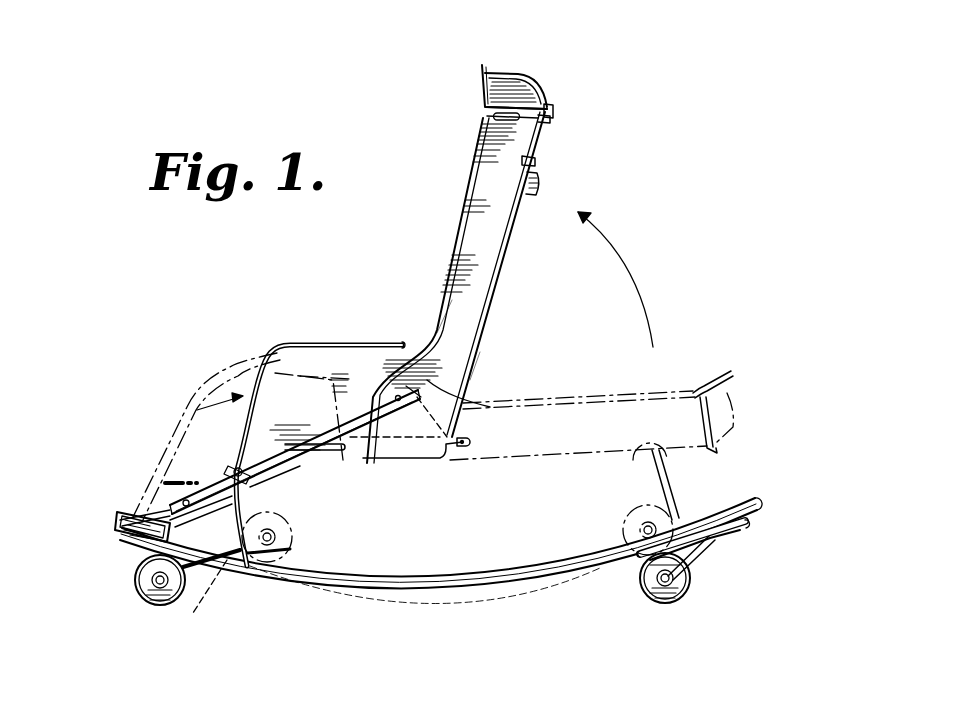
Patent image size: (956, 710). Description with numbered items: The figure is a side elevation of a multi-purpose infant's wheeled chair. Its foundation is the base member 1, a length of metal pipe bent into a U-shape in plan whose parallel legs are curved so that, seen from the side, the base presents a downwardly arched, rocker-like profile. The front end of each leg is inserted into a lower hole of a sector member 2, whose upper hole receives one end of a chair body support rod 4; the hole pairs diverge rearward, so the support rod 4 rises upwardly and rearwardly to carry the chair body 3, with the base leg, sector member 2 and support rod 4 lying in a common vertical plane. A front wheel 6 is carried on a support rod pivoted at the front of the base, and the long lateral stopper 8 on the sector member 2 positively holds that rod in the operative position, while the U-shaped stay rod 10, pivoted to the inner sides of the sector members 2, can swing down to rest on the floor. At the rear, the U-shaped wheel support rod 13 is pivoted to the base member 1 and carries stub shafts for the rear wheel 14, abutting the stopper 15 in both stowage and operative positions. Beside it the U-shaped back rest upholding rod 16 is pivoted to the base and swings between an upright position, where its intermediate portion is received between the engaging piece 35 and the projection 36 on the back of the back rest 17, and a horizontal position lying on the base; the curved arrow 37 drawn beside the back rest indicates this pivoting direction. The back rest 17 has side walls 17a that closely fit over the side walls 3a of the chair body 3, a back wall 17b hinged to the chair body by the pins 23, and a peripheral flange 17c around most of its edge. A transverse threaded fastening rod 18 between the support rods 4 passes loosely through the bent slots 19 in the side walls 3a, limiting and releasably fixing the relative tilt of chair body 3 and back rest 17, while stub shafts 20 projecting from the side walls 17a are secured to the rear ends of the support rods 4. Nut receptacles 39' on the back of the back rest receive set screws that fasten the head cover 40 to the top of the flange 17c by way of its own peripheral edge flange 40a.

The base member 1 is at (490, 590).
The sector member 2 is at (140, 530).
The chair body 3 is at (312, 344).
The side wall 3a is at (277, 358).
The chair body support rod 4 is at (353, 465).
The front wheel 6 is at (157, 597).
The stopper 8 is at (180, 557).
The stay rod 10 is at (270, 560).
The wheel support rod 13 is at (697, 553).
The rear wheel 14 is at (670, 593).
The stopper 15 is at (707, 543).
The back rest upholding rod 16 is at (660, 473).
The back rest 17 is at (505, 298).
The side wall 17a is at (452, 308).
The back wall 17b is at (480, 352).
The flange 17c is at (547, 113).
The fastening rod 18 is at (233, 463).
The bent slot 19 is at (302, 466).
The stub shaft 20 is at (400, 400).
The pin 23 is at (467, 447).
The engaging piece 35 is at (538, 160).
The projection 36 is at (528, 195).
The latch lever 37 is at (542, 172).
The nut receptacle 39' is at (595, 147).
The head cover 40 is at (507, 78).
The peripheral edge flange 40a is at (547, 107).